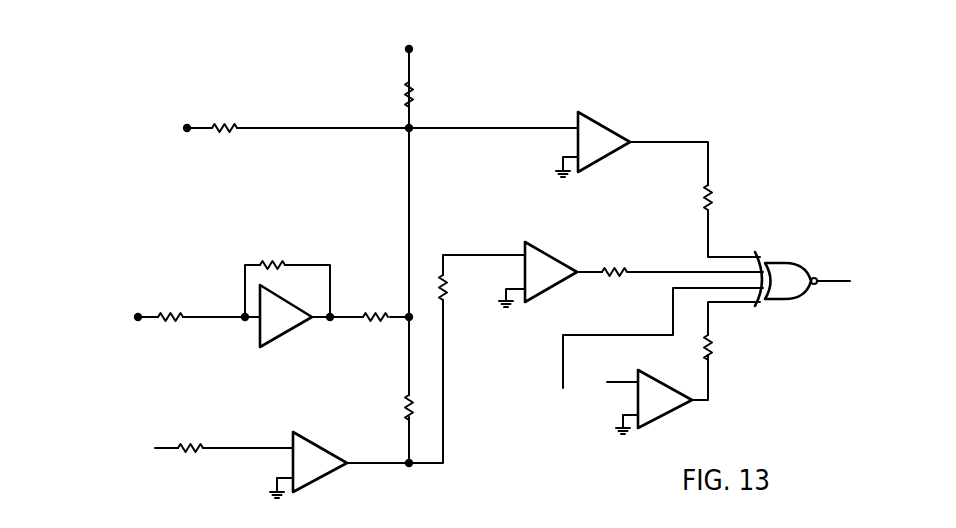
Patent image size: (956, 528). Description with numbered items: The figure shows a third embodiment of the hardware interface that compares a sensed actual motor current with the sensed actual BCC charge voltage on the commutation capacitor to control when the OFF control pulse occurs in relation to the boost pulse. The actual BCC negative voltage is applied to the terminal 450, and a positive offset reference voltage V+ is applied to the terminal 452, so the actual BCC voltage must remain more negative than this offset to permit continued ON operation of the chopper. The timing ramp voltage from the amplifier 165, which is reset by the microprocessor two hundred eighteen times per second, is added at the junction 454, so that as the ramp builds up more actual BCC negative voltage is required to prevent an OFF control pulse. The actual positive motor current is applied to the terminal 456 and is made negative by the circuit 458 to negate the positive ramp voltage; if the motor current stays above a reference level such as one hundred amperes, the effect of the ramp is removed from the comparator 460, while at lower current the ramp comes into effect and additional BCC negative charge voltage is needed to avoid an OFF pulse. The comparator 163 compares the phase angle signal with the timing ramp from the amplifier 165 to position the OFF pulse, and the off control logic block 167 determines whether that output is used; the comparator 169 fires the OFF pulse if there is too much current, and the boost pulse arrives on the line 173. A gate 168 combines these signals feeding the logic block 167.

The terminal 450 is at (193, 123).
The terminal 452 is at (410, 49).
The junction 454 is at (411, 127).
The terminal 456 is at (139, 323).
The circuit 458 is at (293, 333).
The comparator 460 is at (609, 129).
The comparator 163 is at (563, 262).
The amplifier 165 is at (325, 475).
The NOR gate 168 is at (770, 263).
The comparator 169 is at (660, 417).
The line 173 is at (563, 360).
The logic block 167 is at (823, 284).